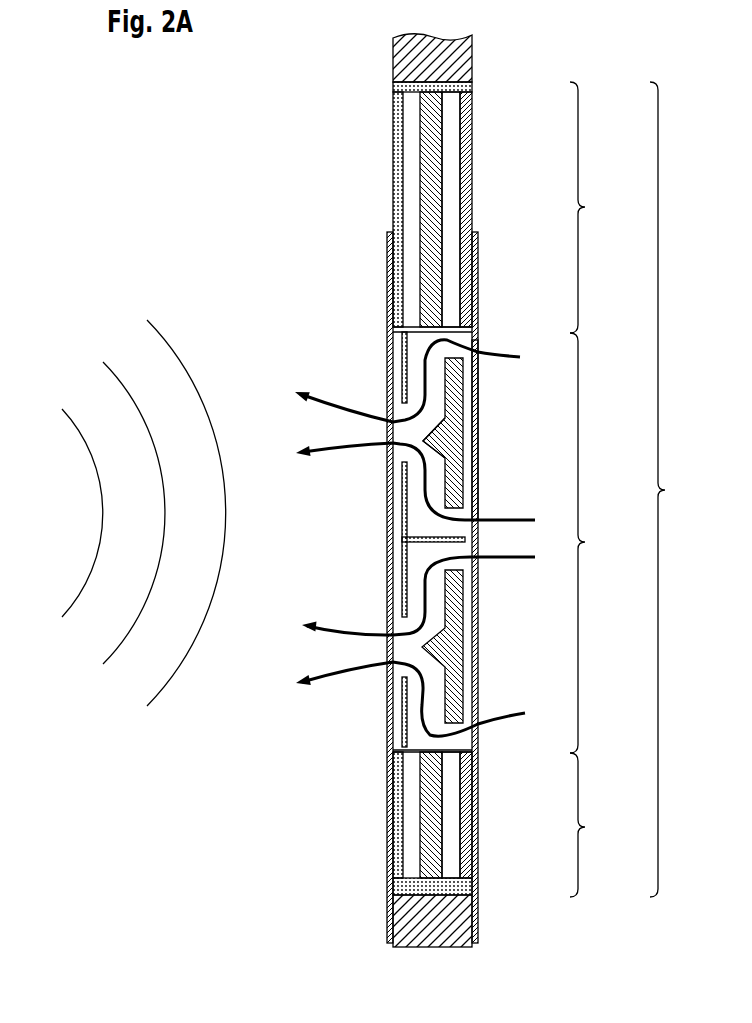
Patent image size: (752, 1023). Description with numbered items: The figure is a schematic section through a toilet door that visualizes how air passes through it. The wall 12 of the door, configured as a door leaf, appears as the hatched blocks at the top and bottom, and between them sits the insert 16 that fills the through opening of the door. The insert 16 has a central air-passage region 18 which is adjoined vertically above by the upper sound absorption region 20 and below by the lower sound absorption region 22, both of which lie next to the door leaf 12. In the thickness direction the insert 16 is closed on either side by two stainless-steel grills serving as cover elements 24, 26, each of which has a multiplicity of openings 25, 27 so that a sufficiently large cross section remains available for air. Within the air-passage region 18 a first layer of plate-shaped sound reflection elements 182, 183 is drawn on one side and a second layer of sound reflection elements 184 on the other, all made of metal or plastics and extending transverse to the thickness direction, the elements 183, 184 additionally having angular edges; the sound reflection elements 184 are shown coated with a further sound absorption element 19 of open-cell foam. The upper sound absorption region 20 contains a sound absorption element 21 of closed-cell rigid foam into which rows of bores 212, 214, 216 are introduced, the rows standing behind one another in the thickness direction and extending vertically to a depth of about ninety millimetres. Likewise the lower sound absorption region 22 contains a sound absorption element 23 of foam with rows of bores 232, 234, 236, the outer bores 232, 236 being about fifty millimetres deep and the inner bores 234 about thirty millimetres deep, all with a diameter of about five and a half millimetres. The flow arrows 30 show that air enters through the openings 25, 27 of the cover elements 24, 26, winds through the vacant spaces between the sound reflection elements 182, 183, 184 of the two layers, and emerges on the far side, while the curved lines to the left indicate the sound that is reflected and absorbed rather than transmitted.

The wall 12 is at (458, 52).
The insert 16 is at (671, 489).
The air-passage region 18 is at (592, 543).
The further sound absorption element 19 is at (465, 405).
The upper sound absorption region 20 is at (592, 207).
The sound absorption element 21 is at (457, 108).
The lower sound absorption region 22 is at (592, 825).
The sound absorption element 23 is at (395, 880).
The cover element 24 is at (390, 308).
The openings 25 is at (388, 429).
The cover element 26 is at (478, 246).
The openings 27 is at (478, 431).
The flow arrows 30 is at (337, 672).
The sound reflection element 182 is at (402, 372).
The sound reflection element 183 is at (400, 505).
The sound reflection element 184 is at (463, 458).
The bores 212 is at (412, 133).
The bores 214 is at (420, 168).
The bores 216 is at (452, 220).
The bores 232 is at (412, 858).
The bores 234 is at (442, 808).
The bores 236 is at (452, 773).